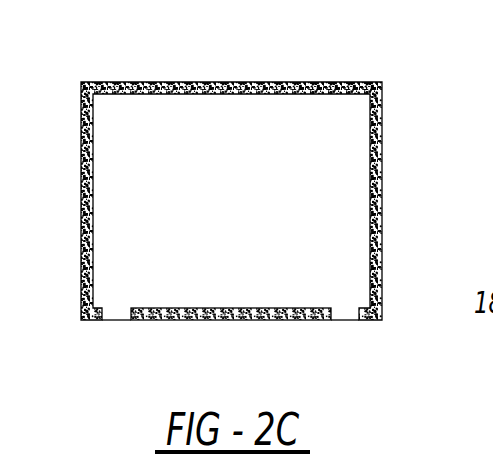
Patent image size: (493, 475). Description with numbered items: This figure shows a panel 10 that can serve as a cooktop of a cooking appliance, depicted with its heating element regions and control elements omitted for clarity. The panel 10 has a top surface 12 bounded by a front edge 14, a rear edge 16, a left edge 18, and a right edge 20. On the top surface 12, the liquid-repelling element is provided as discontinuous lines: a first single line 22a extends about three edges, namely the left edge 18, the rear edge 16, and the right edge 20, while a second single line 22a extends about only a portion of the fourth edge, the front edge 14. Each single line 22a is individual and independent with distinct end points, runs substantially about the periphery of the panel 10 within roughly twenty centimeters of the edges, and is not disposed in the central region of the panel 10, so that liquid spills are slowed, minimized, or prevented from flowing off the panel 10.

The panel 10 is at (238, 193).
The top surface 12 is at (245, 117).
The front edge 14 is at (312, 320).
The rear edge 16 is at (180, 82).
The left edge 18 is at (81, 229).
The right edge 20 is at (382, 165).
The single line 22a is at (328, 82).